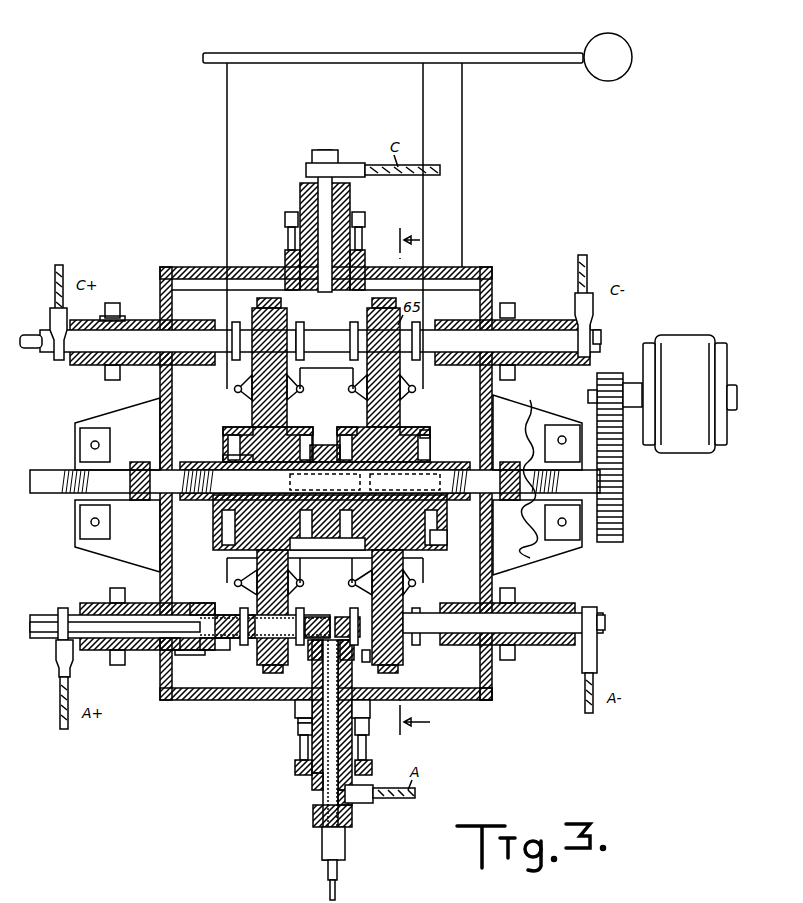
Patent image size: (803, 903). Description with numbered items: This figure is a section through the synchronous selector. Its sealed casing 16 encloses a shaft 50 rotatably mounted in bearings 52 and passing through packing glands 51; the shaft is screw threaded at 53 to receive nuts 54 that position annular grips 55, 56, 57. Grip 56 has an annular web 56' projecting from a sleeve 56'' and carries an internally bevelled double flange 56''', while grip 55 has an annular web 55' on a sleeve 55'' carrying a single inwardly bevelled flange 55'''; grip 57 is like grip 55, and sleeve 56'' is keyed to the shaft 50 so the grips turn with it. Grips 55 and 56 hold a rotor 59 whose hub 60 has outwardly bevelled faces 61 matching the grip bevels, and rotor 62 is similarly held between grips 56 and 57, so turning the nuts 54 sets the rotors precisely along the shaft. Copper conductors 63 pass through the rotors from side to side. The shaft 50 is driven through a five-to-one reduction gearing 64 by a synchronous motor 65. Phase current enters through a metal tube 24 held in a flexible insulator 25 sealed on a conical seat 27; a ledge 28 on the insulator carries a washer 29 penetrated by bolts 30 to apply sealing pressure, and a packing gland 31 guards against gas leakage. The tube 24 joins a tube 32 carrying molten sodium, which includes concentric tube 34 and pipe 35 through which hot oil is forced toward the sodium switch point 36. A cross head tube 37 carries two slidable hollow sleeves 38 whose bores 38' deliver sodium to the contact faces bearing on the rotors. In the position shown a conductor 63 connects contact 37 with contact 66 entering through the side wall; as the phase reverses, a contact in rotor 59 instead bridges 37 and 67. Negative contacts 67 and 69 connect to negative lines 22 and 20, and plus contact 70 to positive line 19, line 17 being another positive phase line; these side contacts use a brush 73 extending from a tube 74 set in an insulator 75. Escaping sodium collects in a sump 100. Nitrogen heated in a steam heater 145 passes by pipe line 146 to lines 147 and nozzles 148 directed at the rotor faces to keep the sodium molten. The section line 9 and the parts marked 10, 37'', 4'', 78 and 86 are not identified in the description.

The section line 9 is at (438, 722).
The lower rotor gear 10 is at (401, 451).
The sealed casing 16 is at (189, 258).
The positive D.C. phase line 17 is at (54, 286).
The positive D.C. phase line 19 is at (70, 692).
The negative D.C. current line 20 is at (588, 270).
The negative D.C. current line 22 is at (585, 688).
The metal tube 24 is at (372, 790).
The flexible insulator 25 is at (298, 731).
The conical seat 27 is at (298, 721).
The ledge 28 is at (300, 745).
The washer 29 is at (296, 764).
The bolts 30 is at (312, 778).
The packing gland 31 is at (352, 772).
The tube 32 is at (322, 843).
The tube 34 is at (328, 873).
The pipe 35 is at (330, 895).
The sodium switch point 36 is at (312, 660).
The cross head tube 37 is at (401, 451).
The upper shaft section 37'' is at (326, 341).
The slidable hollow sleeve 38 is at (401, 451).
The bore 38' is at (401, 451).
The key 4'' is at (371, 648).
The shaft 50 is at (62, 486).
The packing gland 51 is at (140, 462).
The bearing 52 is at (75, 465).
The screw thread 53 is at (223, 457).
The nut 54 is at (226, 440).
The annular grip 55 is at (401, 451).
The annular web 55' is at (448, 431).
The sleeve 55'' is at (405, 481).
The single inwardly bevelled flange 55''' is at (416, 417).
The annular grip 56 is at (401, 451).
The annular web 56' is at (352, 417).
The sleeve 56'' is at (325, 481).
The internally bevelled double flange 56''' is at (294, 417).
The annular grip 57 is at (223, 430).
The rotor 59 is at (400, 380).
The hub 60 is at (440, 521).
The outwardly bevelled face 61 is at (440, 541).
The rotor 62 is at (252, 377).
The copper conductor 63 is at (401, 451).
The reduction gearing 64 is at (618, 368).
The synchronous motor 65 is at (680, 338).
The contact 66 is at (190, 615).
The contact 67 is at (455, 645).
The contact 69 is at (445, 325).
The contact 70 is at (209, 594).
The brush 73 is at (218, 648).
The tube 74 is at (205, 655).
The insulator 75 is at (180, 648).
The upper left shaft 78 is at (190, 322).
The flange 86 is at (296, 712).
The sump 100 is at (484, 700).
The steam heater 145 is at (604, 34).
The pipe line 146 is at (356, 53).
The lines 147 is at (227, 143).
The nozzle 148 is at (240, 399).